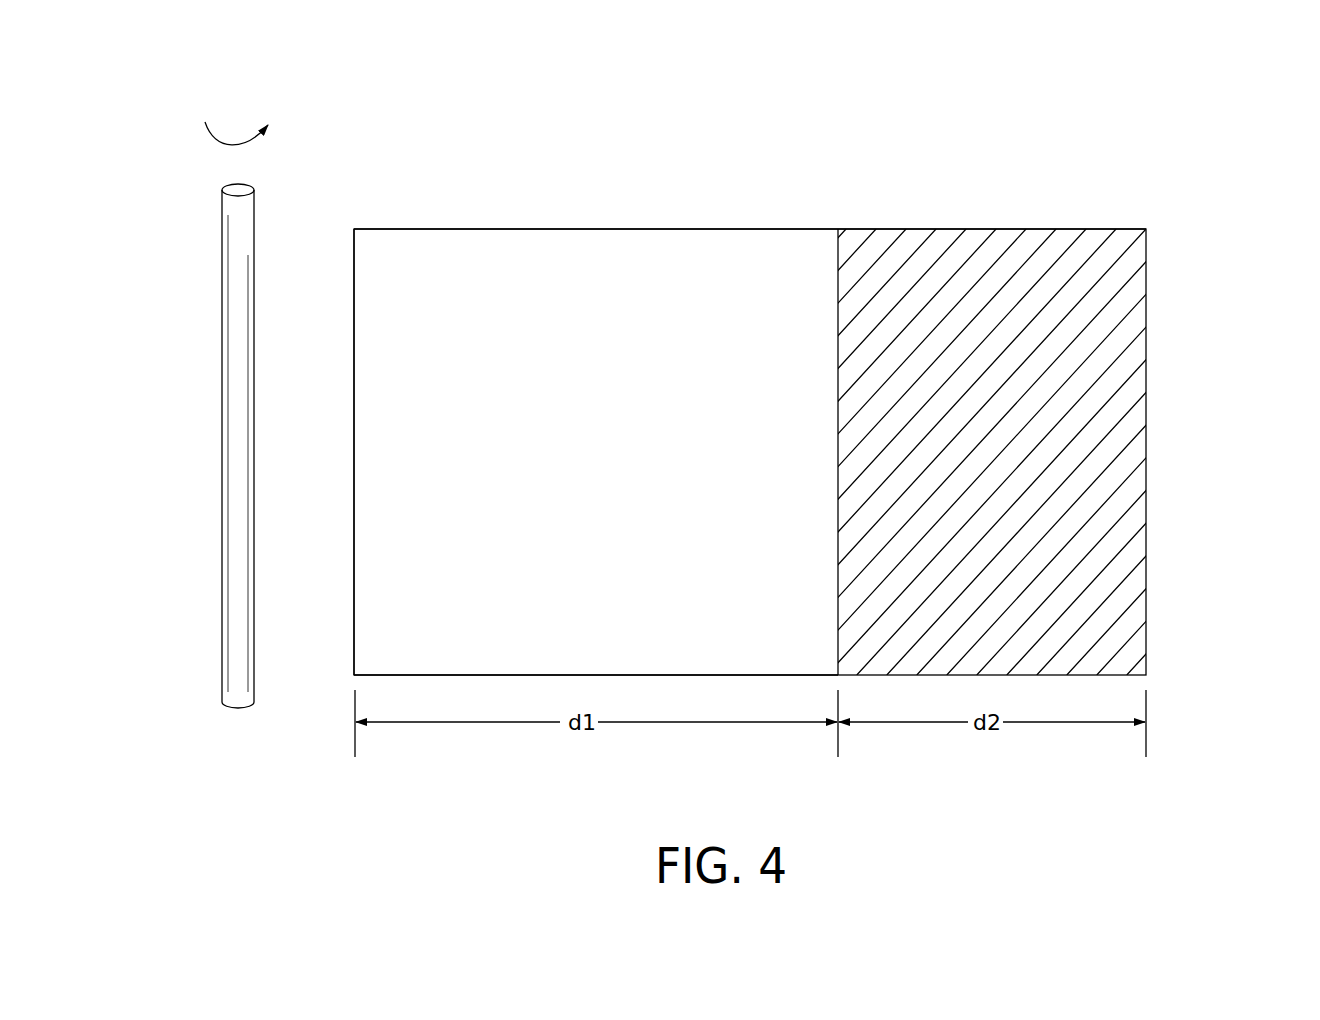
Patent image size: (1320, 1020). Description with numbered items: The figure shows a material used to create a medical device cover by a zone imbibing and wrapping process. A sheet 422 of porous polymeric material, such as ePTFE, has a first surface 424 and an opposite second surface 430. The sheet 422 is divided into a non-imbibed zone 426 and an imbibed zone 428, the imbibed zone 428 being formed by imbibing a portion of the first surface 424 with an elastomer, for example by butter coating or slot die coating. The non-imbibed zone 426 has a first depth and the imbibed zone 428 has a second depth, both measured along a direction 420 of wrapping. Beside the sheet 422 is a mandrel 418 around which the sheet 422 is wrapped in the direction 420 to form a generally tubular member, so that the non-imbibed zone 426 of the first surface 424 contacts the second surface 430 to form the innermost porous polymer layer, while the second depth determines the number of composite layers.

The mandrel 418 is at (222, 535).
The direction of wrapping 420 is at (228, 147).
The sheet 422 is at (647, 167).
The first surface 424 is at (705, 257).
The non-imbibed zone 426 is at (398, 612).
The imbibed zone 428 is at (1130, 432).
The second surface 430 is at (354, 352).